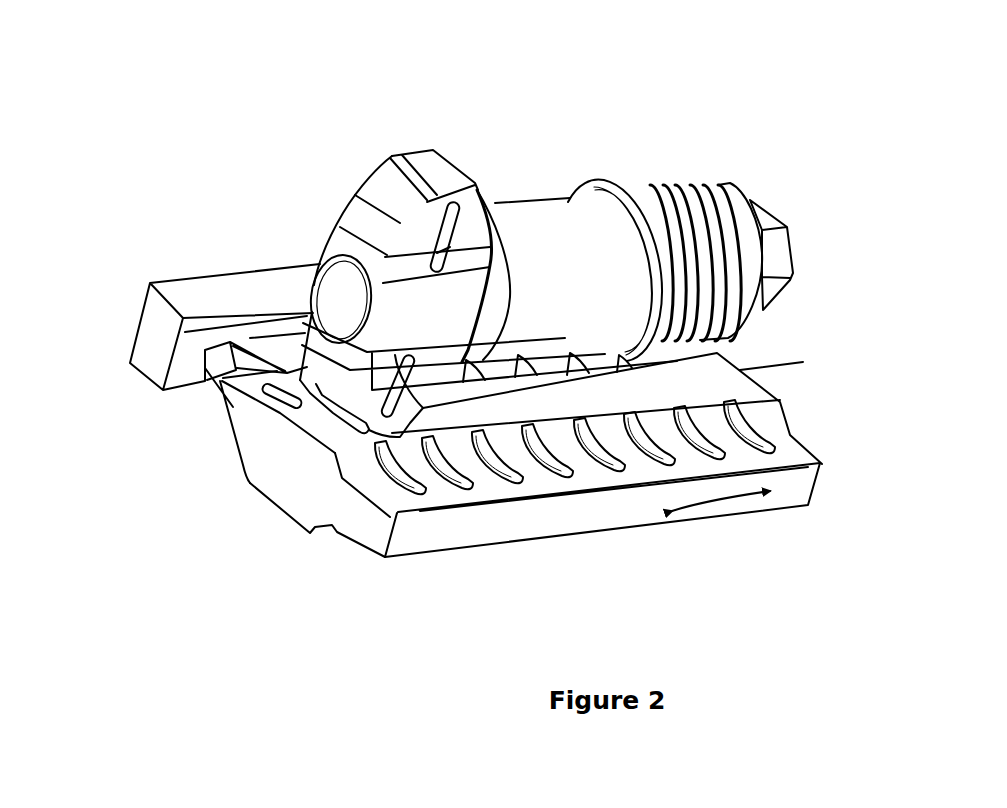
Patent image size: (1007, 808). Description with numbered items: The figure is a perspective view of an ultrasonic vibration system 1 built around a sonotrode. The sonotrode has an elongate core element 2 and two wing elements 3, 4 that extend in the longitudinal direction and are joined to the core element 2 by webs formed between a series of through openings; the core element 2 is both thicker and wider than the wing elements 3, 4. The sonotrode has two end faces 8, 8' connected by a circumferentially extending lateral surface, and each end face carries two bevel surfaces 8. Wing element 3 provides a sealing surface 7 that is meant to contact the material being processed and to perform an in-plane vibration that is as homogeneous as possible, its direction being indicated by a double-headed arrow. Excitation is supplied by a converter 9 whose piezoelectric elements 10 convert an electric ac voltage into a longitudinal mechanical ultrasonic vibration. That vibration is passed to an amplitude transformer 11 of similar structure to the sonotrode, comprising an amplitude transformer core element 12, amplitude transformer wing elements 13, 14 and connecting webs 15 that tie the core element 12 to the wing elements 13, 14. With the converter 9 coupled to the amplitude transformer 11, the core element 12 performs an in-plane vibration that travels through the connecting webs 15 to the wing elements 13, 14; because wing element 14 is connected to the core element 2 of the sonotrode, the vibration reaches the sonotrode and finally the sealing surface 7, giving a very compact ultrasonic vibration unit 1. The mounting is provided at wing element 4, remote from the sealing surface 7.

The ultrasonic vibration system 1 is at (839, 196).
The core element 2 is at (273, 493).
The wing element 3 is at (392, 548).
The wing element 4 is at (228, 425).
The sealing surface 7 is at (567, 522).
The bevel surfaces 8 is at (317, 500).
The end face 8' is at (271, 515).
The converter 9 is at (612, 223).
The piezoelectric elements 10 is at (685, 217).
The amplitude transformer 11 is at (333, 250).
The amplitude transformer core element 12 is at (400, 318).
The amplitude transformer wing element 13 is at (452, 193).
The amplitude transformer wing element 14 is at (380, 427).
The connecting webs 15 is at (412, 240).